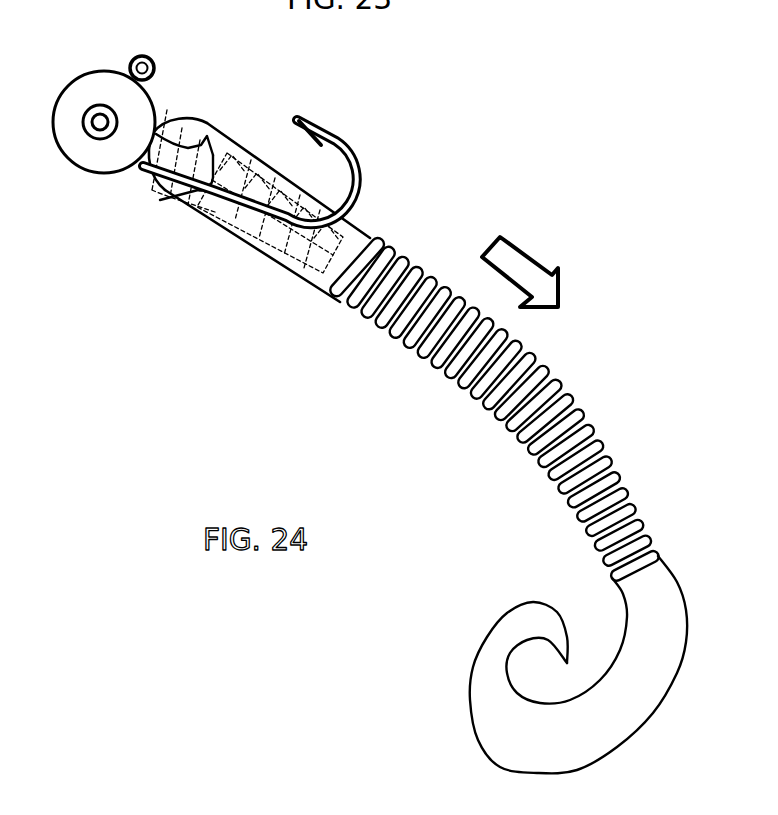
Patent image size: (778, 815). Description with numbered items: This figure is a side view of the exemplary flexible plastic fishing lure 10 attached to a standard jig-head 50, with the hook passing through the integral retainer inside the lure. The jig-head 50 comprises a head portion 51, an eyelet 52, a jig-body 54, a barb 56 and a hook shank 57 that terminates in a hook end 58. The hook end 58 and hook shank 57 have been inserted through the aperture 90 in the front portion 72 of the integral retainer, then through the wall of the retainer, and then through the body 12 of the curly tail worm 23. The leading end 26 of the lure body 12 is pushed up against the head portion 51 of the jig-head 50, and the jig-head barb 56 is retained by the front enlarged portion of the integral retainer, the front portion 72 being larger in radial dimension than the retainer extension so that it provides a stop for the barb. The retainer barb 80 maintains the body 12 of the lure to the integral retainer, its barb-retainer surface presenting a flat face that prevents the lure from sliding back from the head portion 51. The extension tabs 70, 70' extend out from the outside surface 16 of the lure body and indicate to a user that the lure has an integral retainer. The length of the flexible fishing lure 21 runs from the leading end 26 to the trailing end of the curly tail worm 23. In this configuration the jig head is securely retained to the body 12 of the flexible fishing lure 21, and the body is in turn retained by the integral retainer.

The flexible plastic fishing lure 10 is at (470, 135).
The lure body 12 is at (281, 280).
The outside surface 16 is at (267, 274).
The flexible fishing lure 21 is at (407, 248).
The curly tail worm 23 is at (355, 236).
The leading end 26 is at (140, 175).
The jig-head 50 is at (92, 70).
The head portion 51 is at (70, 110).
The eyelet 52 is at (142, 55).
The jig-body 54 is at (183, 115).
The barb 56 is at (213, 134).
The hook shank 57 is at (358, 160).
The hook end 58 is at (299, 116).
The extension tab 70 is at (198, 123).
The extension tab 70' is at (139, 194).
The front portion 72 is at (185, 222).
The retainer barb 80 is at (220, 232).
The aperture 90 is at (248, 160).